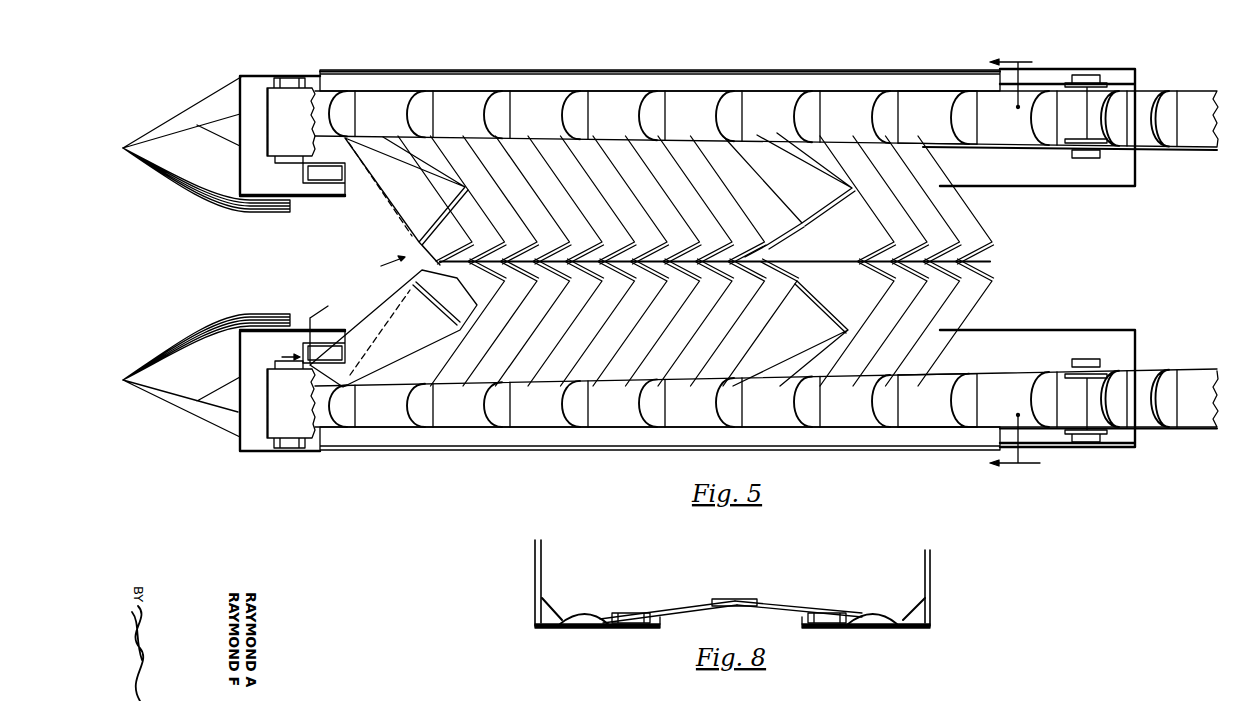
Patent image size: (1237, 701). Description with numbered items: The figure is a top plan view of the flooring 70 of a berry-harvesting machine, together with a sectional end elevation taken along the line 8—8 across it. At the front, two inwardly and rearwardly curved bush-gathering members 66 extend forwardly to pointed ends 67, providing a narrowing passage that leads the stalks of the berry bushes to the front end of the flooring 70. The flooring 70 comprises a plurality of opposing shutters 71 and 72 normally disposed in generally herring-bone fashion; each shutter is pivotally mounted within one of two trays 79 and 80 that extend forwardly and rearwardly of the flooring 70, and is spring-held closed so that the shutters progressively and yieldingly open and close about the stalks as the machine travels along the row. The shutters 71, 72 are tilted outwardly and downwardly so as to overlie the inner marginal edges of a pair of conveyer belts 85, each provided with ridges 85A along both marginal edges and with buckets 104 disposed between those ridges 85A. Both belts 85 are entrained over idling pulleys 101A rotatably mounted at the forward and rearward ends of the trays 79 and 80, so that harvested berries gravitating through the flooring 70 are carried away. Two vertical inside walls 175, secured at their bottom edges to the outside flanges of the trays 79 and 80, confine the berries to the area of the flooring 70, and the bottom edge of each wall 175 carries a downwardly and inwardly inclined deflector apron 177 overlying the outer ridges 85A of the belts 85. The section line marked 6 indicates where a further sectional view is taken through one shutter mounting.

In FIG. 5, the section line 6- 6 is at (331, 300).
In FIG. 5, the section line 8- 8 is at (1023, 260).
In FIG. 5, the bush-gathering member 66 is at (232, 213).
In FIG. 5, the pointed end 67 is at (123, 148).
In FIG. 8, the flooring 70 is at (763, 602).
In FIG. 5, the shutter 71 is at (669, 199).
In FIG. 8, the shutter 71 is at (792, 607).
In FIG. 5, the shutter 72 is at (652, 323).
In FIG. 8, the shutter 72 is at (702, 609).
In FIG. 5, the tray 79 is at (243, 83).
In FIG. 8, the tray 79 is at (906, 629).
In FIG. 5, the tray 80 is at (272, 452).
In FIG. 8, the tray 80 is at (553, 629).
In FIG. 5, the conveyer belt 85 is at (937, 259).
In FIG. 5, the ridge 85A is at (989, 149).
In FIG. 5, the idling pulley 101A is at (254, 173).
In FIG. 5, the bucket 104 is at (968, 122).
In FIG. 5, the inside wall 175 is at (388, 75).
In FIG. 8, the inside wall 175 is at (535, 585).
In FIG. 5, the deflector apron 177 is at (612, 92).
In FIG. 8, the deflector apron 177 is at (562, 614).